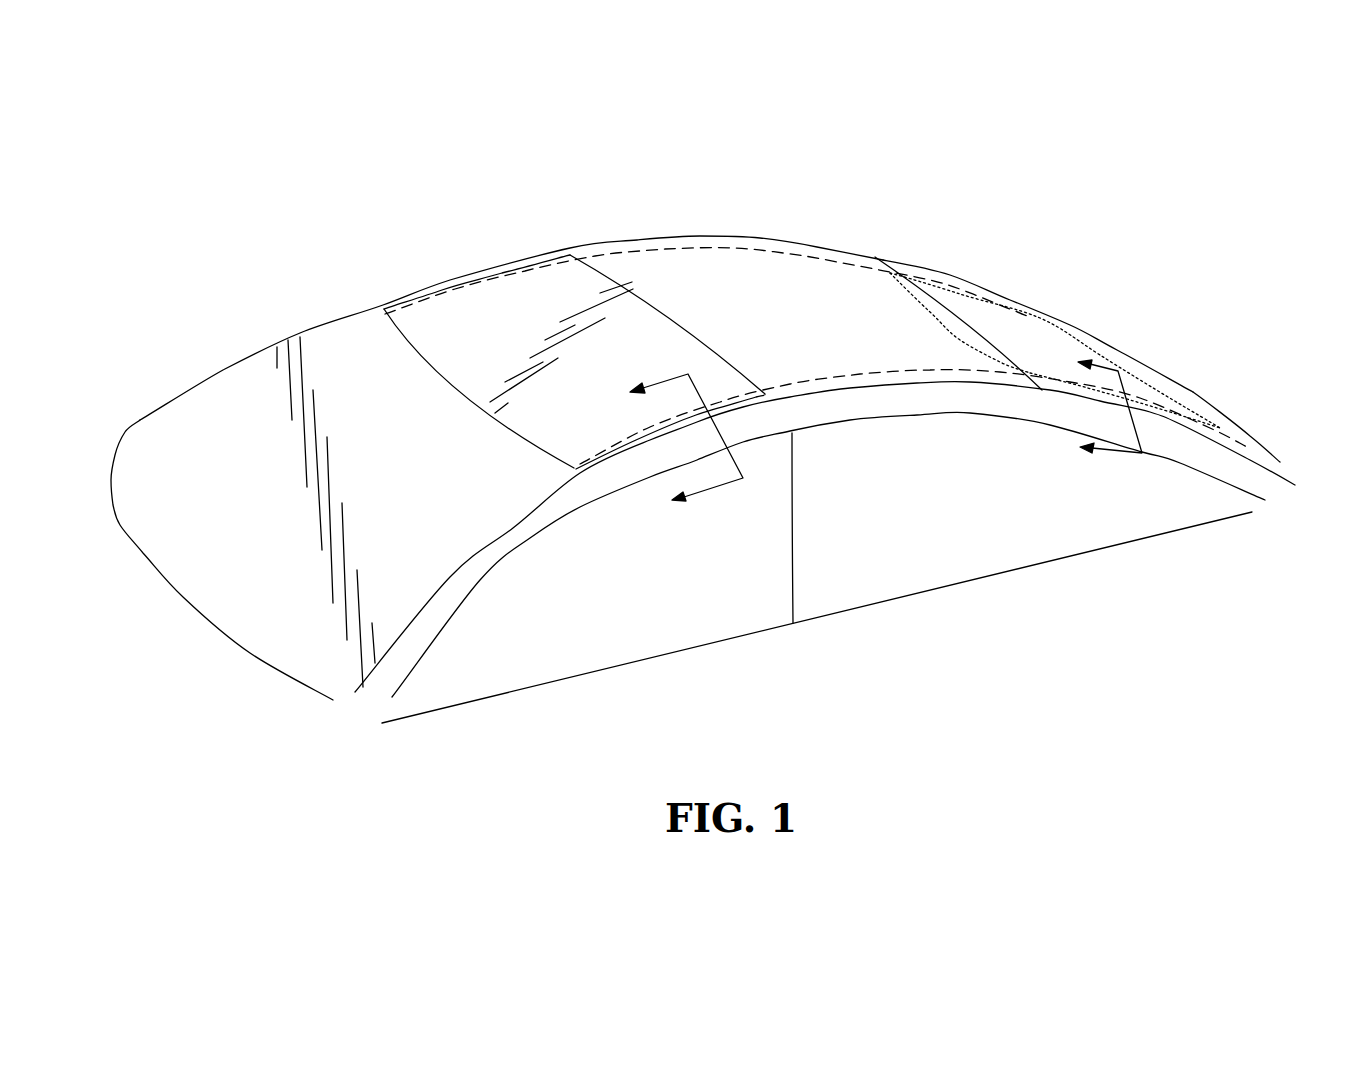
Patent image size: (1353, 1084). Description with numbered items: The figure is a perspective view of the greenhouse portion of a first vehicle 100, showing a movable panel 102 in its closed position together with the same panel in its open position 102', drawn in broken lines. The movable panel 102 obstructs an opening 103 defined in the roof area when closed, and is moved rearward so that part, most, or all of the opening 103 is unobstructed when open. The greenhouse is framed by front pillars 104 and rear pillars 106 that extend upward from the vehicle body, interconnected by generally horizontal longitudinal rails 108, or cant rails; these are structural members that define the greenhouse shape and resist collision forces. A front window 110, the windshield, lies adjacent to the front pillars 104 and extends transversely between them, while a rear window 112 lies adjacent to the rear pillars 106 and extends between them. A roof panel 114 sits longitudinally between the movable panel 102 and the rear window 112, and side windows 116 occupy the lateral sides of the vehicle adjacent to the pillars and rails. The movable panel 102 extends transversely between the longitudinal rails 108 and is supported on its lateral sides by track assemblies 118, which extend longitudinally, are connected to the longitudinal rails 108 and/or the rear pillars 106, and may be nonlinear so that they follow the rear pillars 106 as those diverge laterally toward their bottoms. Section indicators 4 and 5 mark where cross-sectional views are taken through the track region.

The first vehicle 100 is at (206, 227).
The movable panel 102 is at (549, 362).
The movable panel in open position 102' is at (1055, 350).
The opening 103 is at (443, 288).
The front pillars 104 is at (225, 370).
The rear pillars 106 is at (947, 275).
The longitudinal rails 108 is at (698, 238).
The front window 110 is at (189, 588).
The rear window 112 is at (1193, 393).
The roof panel 114 is at (812, 255).
The side windows 116 is at (666, 647).
The track assemblies 118 is at (515, 268).
The section line 4- 4 is at (674, 448).
The section line 5- 5 is at (1100, 401).